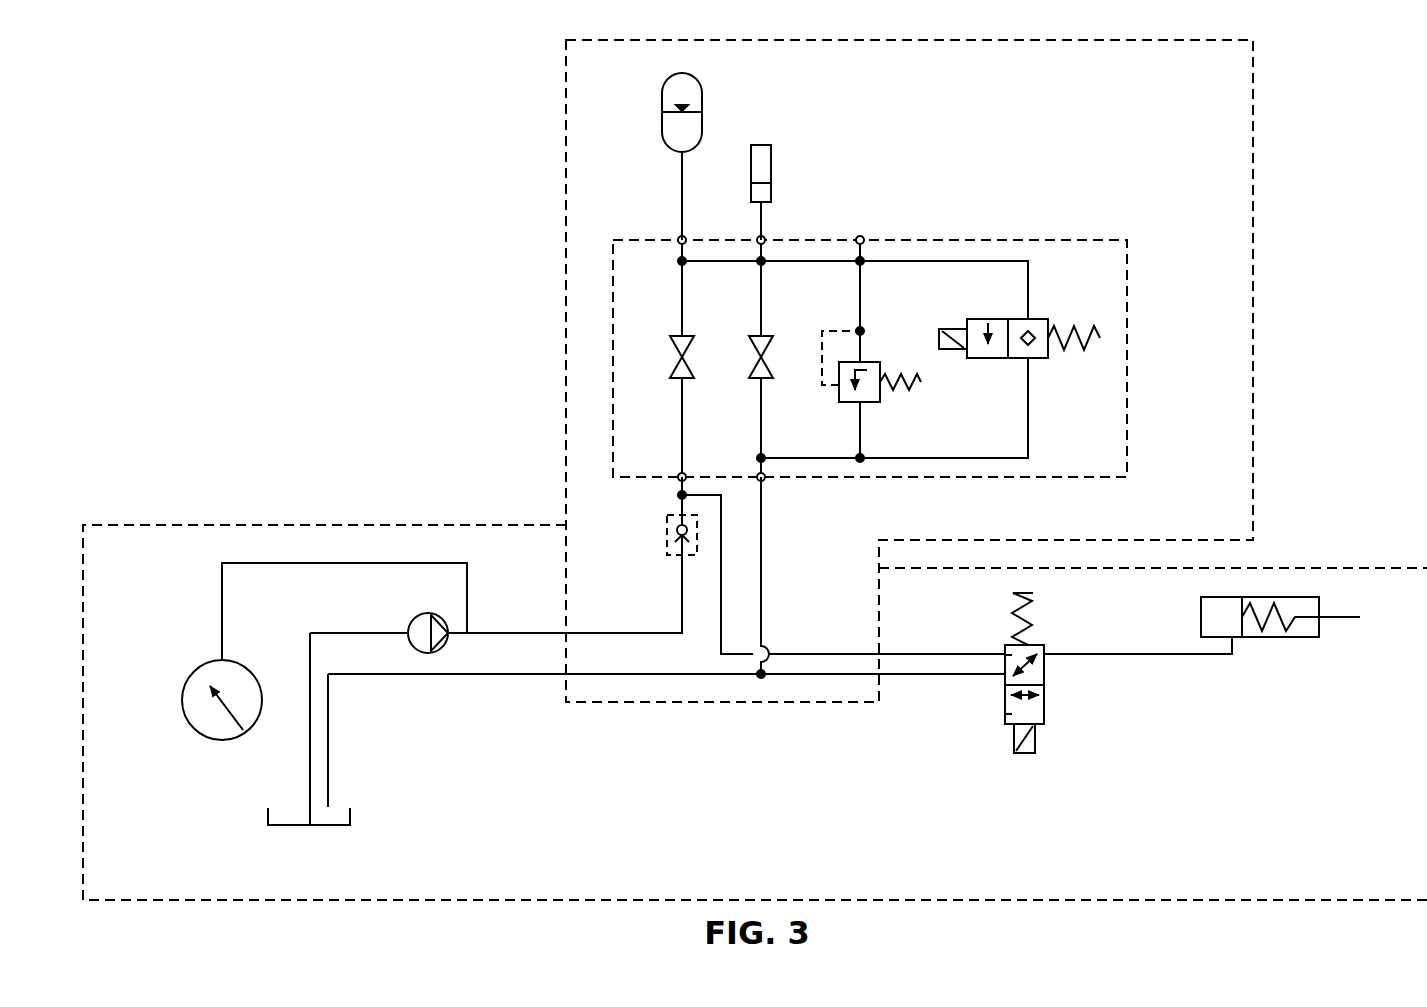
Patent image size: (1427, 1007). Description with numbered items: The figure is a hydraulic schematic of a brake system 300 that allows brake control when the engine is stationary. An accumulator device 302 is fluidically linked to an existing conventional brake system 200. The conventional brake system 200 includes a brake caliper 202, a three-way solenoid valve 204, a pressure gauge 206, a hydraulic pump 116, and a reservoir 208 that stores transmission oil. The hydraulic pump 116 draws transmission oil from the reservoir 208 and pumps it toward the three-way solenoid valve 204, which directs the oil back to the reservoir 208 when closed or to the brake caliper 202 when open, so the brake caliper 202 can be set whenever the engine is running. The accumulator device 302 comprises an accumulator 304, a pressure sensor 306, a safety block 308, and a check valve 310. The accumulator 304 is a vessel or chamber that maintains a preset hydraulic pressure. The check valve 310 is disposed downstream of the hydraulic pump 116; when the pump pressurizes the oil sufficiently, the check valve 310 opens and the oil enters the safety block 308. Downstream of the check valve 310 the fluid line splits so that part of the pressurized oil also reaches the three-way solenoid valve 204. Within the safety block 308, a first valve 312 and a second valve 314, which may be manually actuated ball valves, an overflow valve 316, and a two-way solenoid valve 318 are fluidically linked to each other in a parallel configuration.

The brake system 300 is at (404, 74).
The accumulator device 302 is at (1258, 260).
The accumulator 304 is at (702, 95).
The pressure sensor 306 is at (771, 166).
The safety block 308 is at (1127, 355).
The check valve 310 is at (672, 537).
The first valve 312 is at (676, 356).
The second valve 314 is at (755, 356).
The overflow valve 316 is at (850, 404).
The two-way solenoid valve 318 is at (1037, 360).
The conventional brake system 200 is at (265, 520).
The brake caliper 202 is at (1270, 638).
The three-way solenoid valve 204 is at (1025, 755).
The pressure gauge 206 is at (202, 668).
The reservoir 208 is at (283, 826).
The hydraulic pump 116 is at (420, 614).